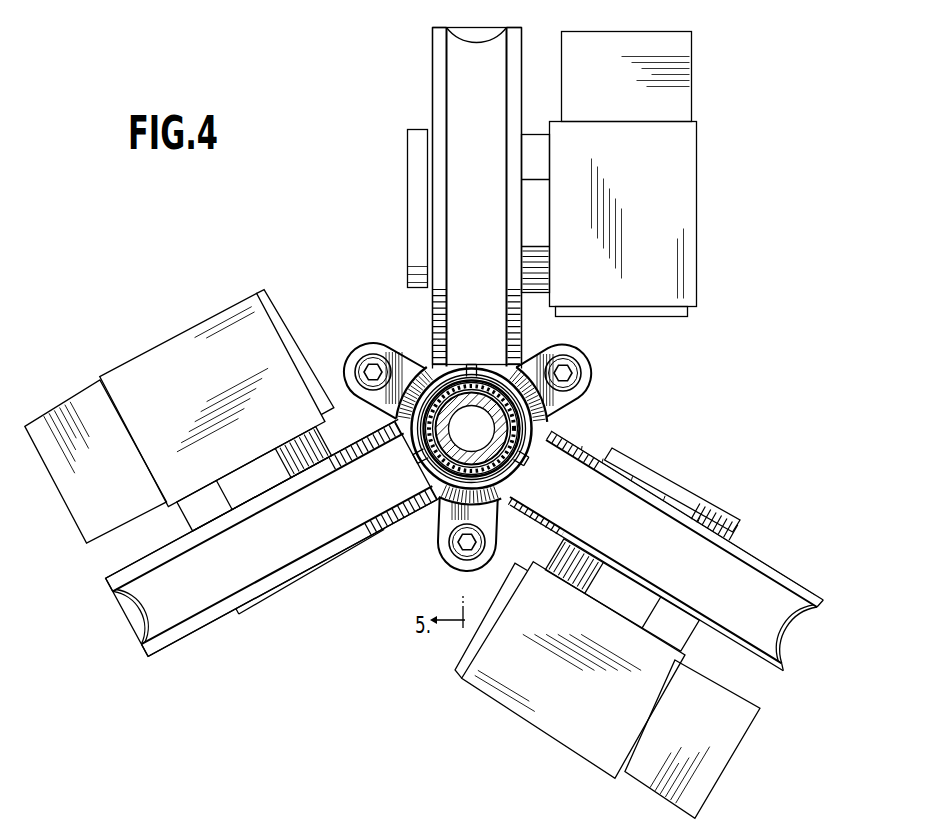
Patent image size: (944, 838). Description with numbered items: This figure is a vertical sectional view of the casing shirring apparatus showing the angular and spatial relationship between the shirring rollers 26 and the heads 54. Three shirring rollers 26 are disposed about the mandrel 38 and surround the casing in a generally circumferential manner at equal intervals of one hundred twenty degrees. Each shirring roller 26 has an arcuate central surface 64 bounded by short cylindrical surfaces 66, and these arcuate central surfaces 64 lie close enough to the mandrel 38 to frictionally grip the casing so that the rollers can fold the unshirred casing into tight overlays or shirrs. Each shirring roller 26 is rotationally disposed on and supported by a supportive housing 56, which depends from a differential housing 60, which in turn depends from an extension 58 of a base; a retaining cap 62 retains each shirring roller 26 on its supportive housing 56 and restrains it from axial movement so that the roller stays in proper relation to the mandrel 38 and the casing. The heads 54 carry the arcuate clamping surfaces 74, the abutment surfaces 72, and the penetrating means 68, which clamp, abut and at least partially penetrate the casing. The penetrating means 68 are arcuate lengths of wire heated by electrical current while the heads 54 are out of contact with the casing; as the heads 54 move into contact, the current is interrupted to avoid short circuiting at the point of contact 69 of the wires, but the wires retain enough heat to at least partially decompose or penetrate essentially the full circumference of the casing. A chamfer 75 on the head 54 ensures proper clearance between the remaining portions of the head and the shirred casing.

The shirring roller 26 is at (771, 560).
The mandrel 38 is at (472, 429).
The head 54 is at (368, 344).
The supportive housing 56 is at (550, 134).
The extension 58 is at (694, 80).
The differential housing 60 is at (697, 213).
The retaining cap 62 is at (409, 190).
The arcuate central surface 64 is at (477, 10).
The short cylindrical surface 66 is at (436, 28).
The penetrating means 68 is at (444, 352).
The point of contact 69 is at (418, 468).
The abutment surface 72 is at (411, 444).
The arcuate clamping surface 74 is at (482, 364).
The chamfer 75 is at (392, 412).